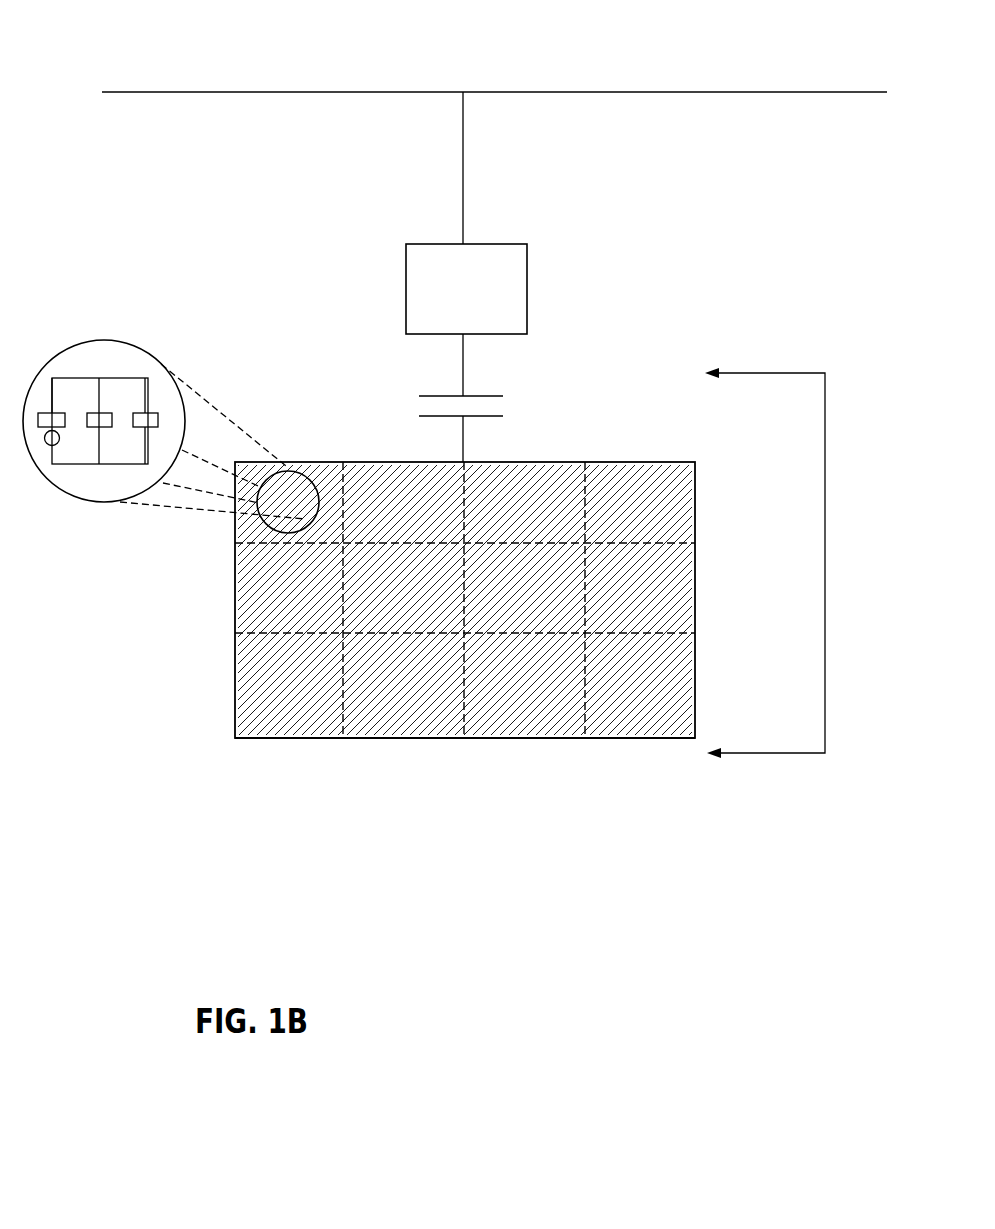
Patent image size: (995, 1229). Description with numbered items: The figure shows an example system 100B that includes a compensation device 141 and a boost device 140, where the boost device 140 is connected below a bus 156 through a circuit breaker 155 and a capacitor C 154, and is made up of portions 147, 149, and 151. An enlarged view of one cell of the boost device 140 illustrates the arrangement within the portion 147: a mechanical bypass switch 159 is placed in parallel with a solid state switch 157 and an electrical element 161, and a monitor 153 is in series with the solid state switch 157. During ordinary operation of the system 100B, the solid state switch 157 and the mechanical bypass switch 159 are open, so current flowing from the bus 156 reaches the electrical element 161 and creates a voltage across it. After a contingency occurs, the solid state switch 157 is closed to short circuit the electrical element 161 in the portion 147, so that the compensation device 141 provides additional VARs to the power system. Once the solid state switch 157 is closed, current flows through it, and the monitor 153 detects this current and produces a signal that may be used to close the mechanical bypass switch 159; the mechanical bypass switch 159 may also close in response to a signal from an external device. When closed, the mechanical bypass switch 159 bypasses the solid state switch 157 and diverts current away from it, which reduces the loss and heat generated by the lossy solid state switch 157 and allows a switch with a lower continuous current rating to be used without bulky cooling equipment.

The system 100B is at (146, 27).
The bus 156 is at (590, 92).
The circuit breaker 155 is at (527, 256).
The capacitor C 154 is at (505, 407).
The boost device 140 is at (425, 639).
The compensation device 141 is at (781, 563).
The portion 147 is at (235, 518).
The portion 149 is at (235, 582).
The portion 151 is at (235, 683).
The solid state switch 157 is at (166, 444).
The mechanical bypass switch 159 is at (98, 427).
The electrical element 161 is at (147, 428).
The monitor 153 is at (52, 446).